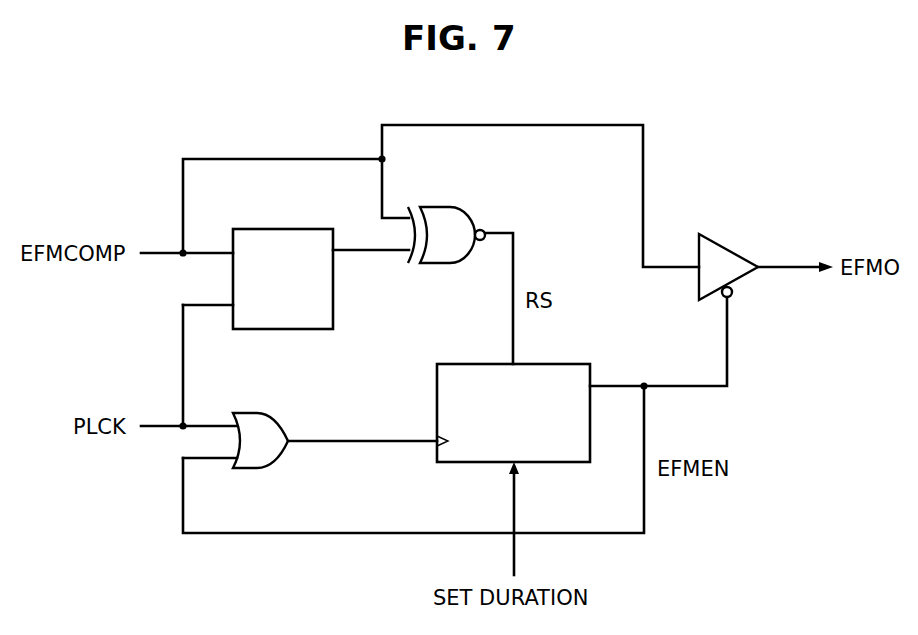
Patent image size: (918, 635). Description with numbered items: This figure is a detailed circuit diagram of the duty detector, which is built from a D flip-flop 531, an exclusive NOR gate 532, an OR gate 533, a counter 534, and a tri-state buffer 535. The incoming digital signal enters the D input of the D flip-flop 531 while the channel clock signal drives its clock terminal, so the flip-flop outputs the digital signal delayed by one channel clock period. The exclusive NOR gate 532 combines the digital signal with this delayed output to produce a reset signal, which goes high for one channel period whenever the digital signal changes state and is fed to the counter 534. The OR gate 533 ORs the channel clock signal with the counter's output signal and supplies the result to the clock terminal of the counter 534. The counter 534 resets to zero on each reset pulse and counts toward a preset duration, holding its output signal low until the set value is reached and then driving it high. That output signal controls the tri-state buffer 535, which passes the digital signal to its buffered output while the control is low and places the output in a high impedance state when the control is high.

The D flip-flop 531 is at (280, 229).
The exclusive NOR gate 532 is at (450, 207).
The OR gate 533 is at (262, 413).
The counter 534 is at (543, 364).
The tri-state buffer 535 is at (730, 249).